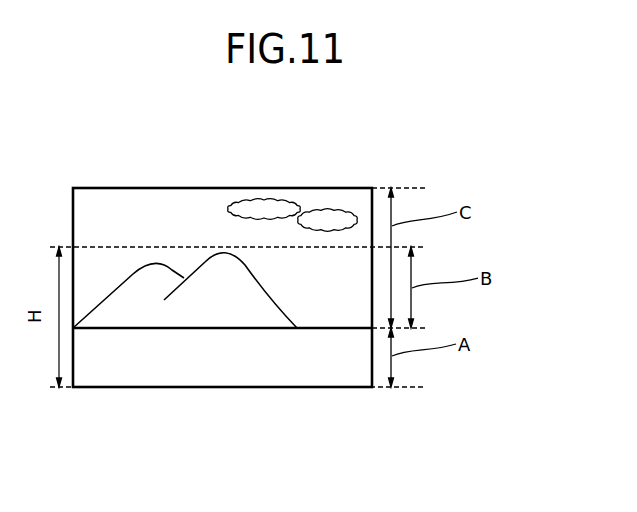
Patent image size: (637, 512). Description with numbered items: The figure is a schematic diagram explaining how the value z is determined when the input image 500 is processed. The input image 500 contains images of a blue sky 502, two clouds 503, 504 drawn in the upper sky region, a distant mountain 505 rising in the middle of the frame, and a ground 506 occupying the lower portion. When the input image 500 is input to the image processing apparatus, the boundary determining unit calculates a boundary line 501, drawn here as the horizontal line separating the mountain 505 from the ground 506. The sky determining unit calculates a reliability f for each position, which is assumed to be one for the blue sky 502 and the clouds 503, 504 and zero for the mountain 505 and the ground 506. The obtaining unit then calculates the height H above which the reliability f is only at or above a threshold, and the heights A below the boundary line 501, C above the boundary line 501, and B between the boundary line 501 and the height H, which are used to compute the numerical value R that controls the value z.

The input image 500 is at (100, 188).
The boundary line 501 is at (138, 330).
The blue sky 502 is at (157, 223).
The cloud 503 is at (260, 210).
The cloud 504 is at (330, 212).
The distant mountain 505 is at (215, 308).
The ground 506 is at (307, 362).